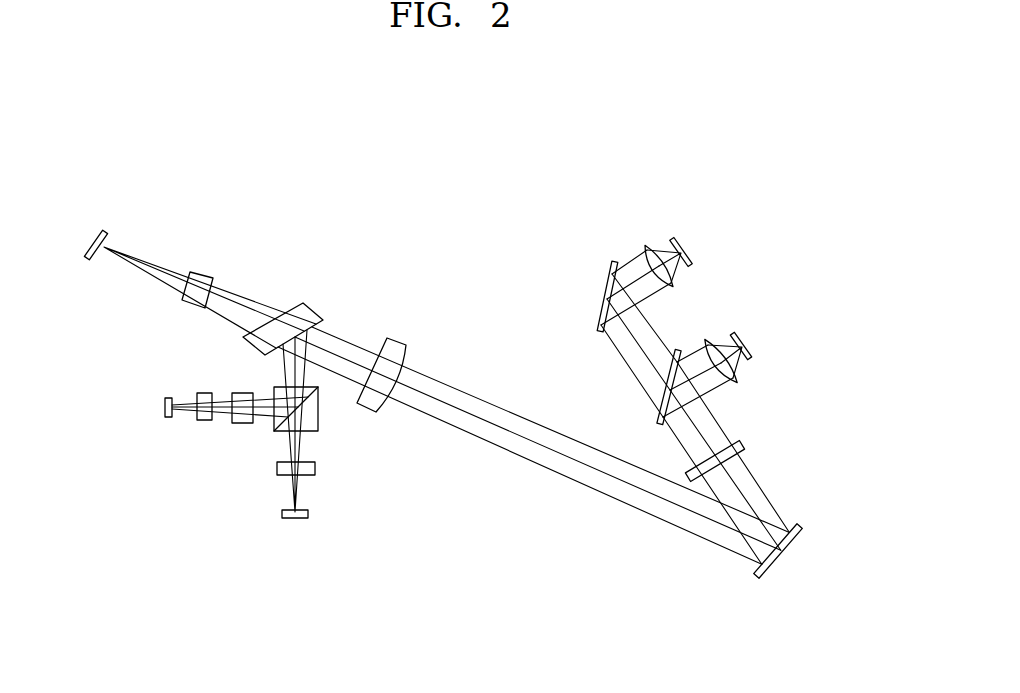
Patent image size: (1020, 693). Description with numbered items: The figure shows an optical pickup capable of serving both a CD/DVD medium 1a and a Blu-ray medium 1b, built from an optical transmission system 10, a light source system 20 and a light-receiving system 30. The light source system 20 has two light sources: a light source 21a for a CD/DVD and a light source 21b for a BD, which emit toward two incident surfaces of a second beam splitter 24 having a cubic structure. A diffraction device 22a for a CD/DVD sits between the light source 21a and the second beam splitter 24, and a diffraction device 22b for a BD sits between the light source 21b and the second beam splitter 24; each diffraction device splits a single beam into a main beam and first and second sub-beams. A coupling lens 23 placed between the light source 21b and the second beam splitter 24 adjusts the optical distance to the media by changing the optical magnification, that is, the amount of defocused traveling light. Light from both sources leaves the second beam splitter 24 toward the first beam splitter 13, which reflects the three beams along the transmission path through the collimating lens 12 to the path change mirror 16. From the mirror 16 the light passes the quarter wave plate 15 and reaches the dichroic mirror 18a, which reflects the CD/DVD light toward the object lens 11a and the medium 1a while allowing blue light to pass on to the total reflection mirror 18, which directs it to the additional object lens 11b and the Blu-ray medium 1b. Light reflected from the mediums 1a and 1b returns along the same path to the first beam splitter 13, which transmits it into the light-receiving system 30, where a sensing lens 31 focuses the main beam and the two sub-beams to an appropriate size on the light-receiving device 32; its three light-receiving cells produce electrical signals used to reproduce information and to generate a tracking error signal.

The optical transmission system 10 is at (678, 156).
The light source system 20 is at (150, 538).
The light-receiving system 30 is at (228, 212).
The light-receiving device 32 is at (102, 230).
The sensing lens 31 is at (206, 274).
The first beam splitter 13 is at (306, 312).
The collimating lens 12 is at (398, 345).
The second beam splitter 24 is at (278, 389).
The light source for a CD/DVD 21a is at (309, 513).
The light source for a BD 21b is at (166, 420).
The diffraction device for a CD/DVD 22a is at (316, 468).
The diffraction device for a BD 22b is at (204, 422).
The coupling lens 23 is at (243, 424).
The total reflection mirror 18 is at (602, 297).
The dichroic mirror 18a is at (660, 424).
The additional object lens 11b is at (648, 247).
The Blu-ray medium 1b is at (687, 253).
The object lens 11a is at (739, 376).
The medium 1a is at (770, 330).
The quarter wave plate 15 is at (748, 444).
The path change mirror 16 is at (803, 524).